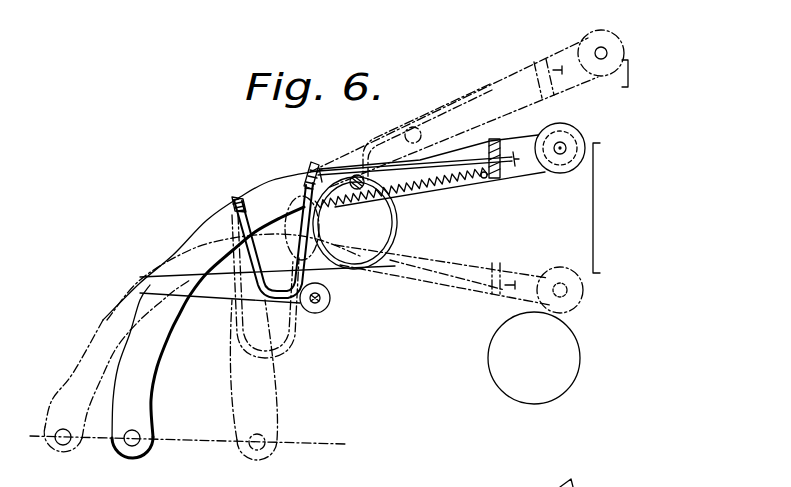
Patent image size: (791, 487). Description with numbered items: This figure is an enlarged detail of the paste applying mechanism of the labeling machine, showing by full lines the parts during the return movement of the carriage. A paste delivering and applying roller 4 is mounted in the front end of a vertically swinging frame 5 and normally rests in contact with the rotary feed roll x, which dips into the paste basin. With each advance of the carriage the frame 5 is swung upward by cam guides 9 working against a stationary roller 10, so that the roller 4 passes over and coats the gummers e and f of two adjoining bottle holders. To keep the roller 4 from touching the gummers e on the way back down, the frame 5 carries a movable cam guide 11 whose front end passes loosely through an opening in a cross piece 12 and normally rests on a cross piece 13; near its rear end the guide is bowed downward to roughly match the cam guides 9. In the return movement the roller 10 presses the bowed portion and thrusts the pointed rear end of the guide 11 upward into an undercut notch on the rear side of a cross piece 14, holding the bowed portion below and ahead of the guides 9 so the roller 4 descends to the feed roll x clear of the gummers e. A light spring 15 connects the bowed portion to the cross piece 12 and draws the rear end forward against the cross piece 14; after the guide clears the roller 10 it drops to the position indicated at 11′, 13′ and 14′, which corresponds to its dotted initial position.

The paste delivering and applying roller 4 is at (568, 119).
The vertically swinging frame 5 is at (271, 183).
The cam guides 9 is at (220, 286).
The stationary roller 10 is at (317, 313).
The cam guide 11 is at (313, 267).
The cam guide in dropped position 11′ is at (490, 90).
The cross piece 12 is at (495, 140).
The cross piece 13 is at (350, 184).
The cross piece position relative to dropped guide 13′ is at (418, 128).
The cross piece 14 is at (248, 222).
The cross piece position relative to dropped guide 14′ is at (314, 175).
The light spring 15 is at (435, 190).
The gummers e is at (591, 212).
The gummers f is at (626, 78).
The rotary feed roll x is at (577, 357).